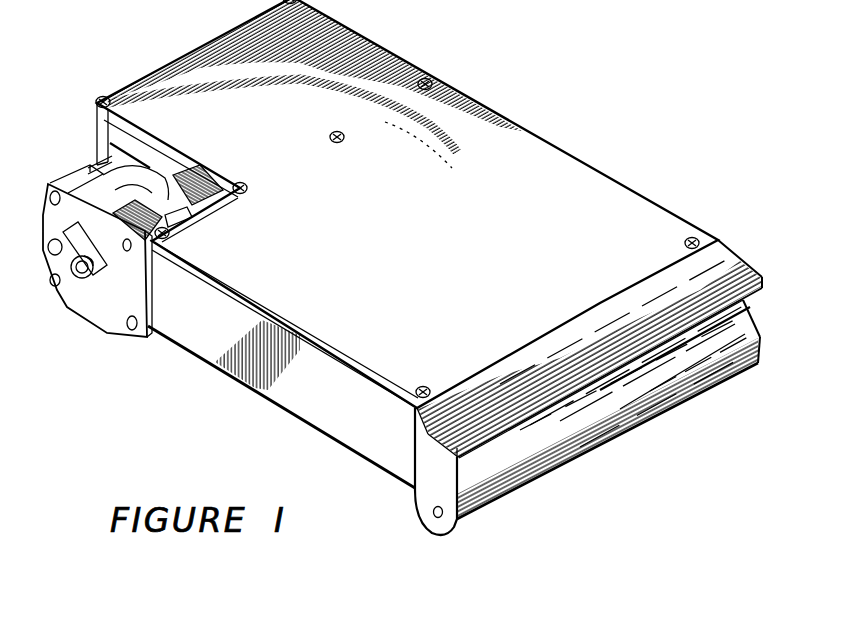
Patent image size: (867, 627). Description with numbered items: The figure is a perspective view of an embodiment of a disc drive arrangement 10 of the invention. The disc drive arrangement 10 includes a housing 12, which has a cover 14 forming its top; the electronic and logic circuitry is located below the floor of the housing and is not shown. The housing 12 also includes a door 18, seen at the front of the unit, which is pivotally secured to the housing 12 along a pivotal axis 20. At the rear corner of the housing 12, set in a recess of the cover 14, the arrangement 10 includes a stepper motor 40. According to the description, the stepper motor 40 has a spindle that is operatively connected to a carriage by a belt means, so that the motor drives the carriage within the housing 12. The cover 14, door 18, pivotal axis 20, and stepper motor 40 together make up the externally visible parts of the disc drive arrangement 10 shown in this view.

The disc drive arrangement 10 is at (568, 52).
The housing 12 is at (633, 193).
The cover 14 is at (571, 224).
The door 18 is at (750, 318).
The pivotal axis 20 is at (434, 518).
The stepper motor 40 is at (73, 168).